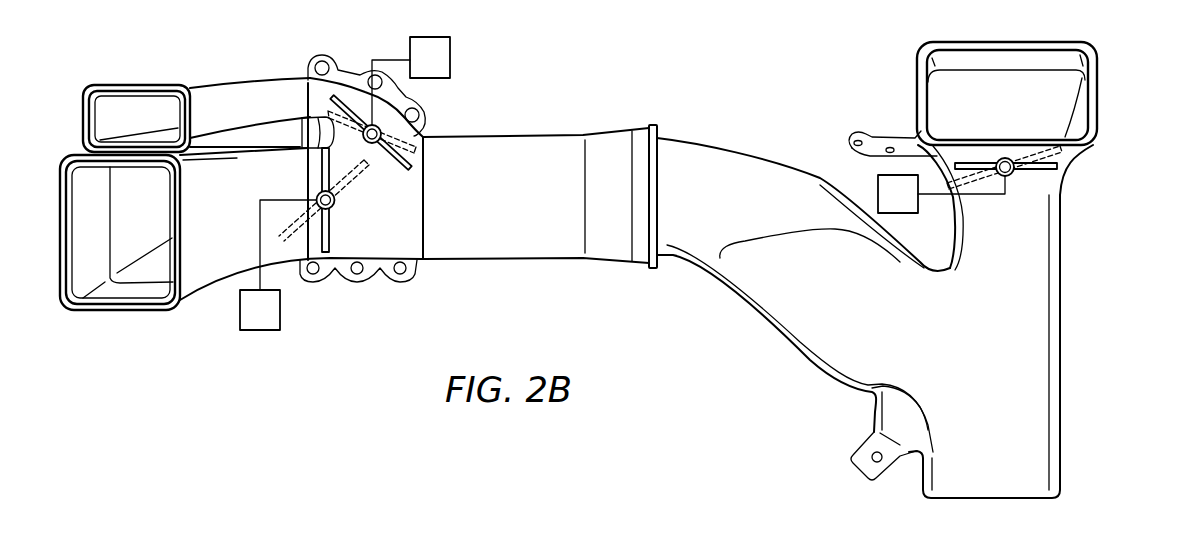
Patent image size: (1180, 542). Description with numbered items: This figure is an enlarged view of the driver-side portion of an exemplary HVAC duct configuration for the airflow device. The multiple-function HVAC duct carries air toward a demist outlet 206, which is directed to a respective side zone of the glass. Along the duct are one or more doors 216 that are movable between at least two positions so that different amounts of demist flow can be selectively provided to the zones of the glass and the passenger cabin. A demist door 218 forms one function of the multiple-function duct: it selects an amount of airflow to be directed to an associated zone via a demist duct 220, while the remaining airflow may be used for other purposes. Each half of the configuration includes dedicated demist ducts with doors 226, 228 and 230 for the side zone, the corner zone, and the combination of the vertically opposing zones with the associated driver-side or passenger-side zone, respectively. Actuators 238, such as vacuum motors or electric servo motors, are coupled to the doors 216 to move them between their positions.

The demist outlet 206 is at (506, 119).
The door 216 is at (362, 175).
The demist door 218 is at (349, 94).
The demist duct 220 is at (229, 67).
The door 226 is at (368, 263).
The door 228 is at (430, 137).
The door 230 is at (1023, 173).
The actuator 238 is at (450, 48).